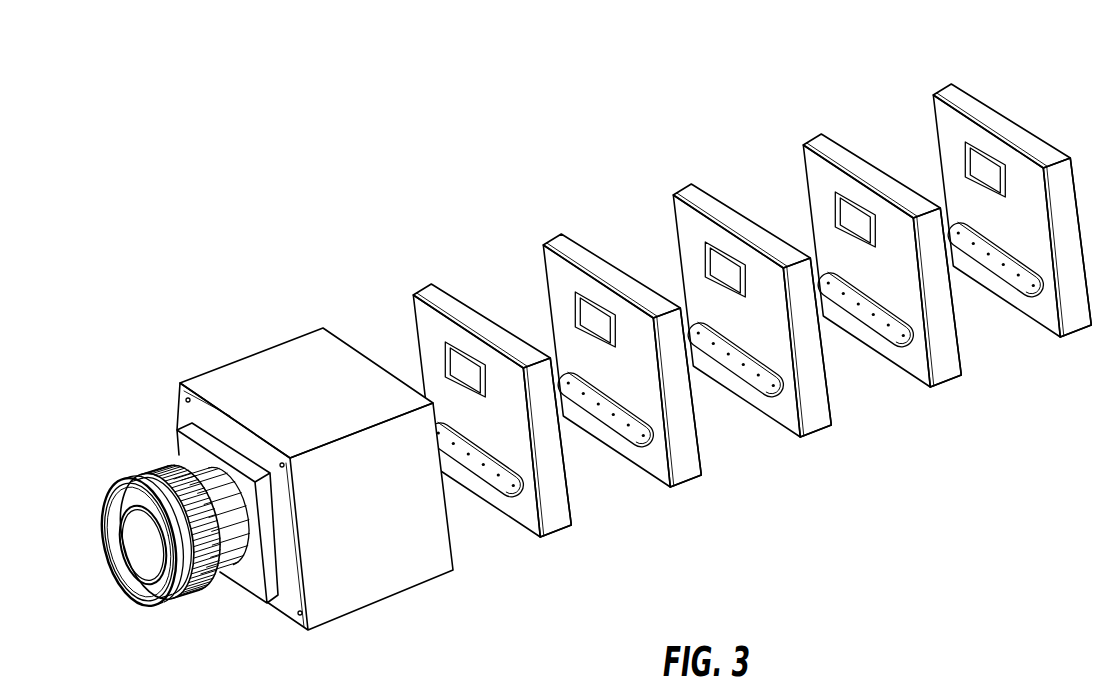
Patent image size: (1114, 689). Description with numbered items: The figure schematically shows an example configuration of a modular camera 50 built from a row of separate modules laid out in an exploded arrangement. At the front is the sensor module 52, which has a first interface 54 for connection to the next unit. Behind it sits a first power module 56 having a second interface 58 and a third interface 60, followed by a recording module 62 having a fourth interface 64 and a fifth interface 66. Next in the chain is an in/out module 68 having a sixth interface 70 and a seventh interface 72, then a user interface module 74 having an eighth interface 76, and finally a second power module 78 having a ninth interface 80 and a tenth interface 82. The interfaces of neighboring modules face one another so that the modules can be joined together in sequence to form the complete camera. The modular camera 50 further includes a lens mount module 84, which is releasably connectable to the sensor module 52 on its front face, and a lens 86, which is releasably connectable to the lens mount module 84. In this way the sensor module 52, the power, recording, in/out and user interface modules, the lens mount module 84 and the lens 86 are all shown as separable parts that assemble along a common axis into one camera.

The modular camera 50 is at (407, 203).
The sensor module 52 is at (255, 377).
The first interface 54 is at (466, 552).
The first power module 56 is at (492, 381).
The second interface 58 is at (440, 391).
The third interface 60 is at (585, 463).
The recording module 62 is at (622, 331).
The fourth interface 64 is at (570, 341).
The fifth interface 66 is at (715, 413).
The in/out module 68 is at (752, 281).
The sixth interface 70 is at (700, 291).
The seventh interface 72 is at (845, 363).
The user interface module 74 is at (1012, 181).
The eighth interface 76 is at (960, 191).
The second power module 78 is at (882, 231).
The ninth interface 80 is at (830, 241).
The tenth interface 82 is at (975, 313).
The lens mount module 84 is at (195, 455).
The lens 86 is at (128, 476).